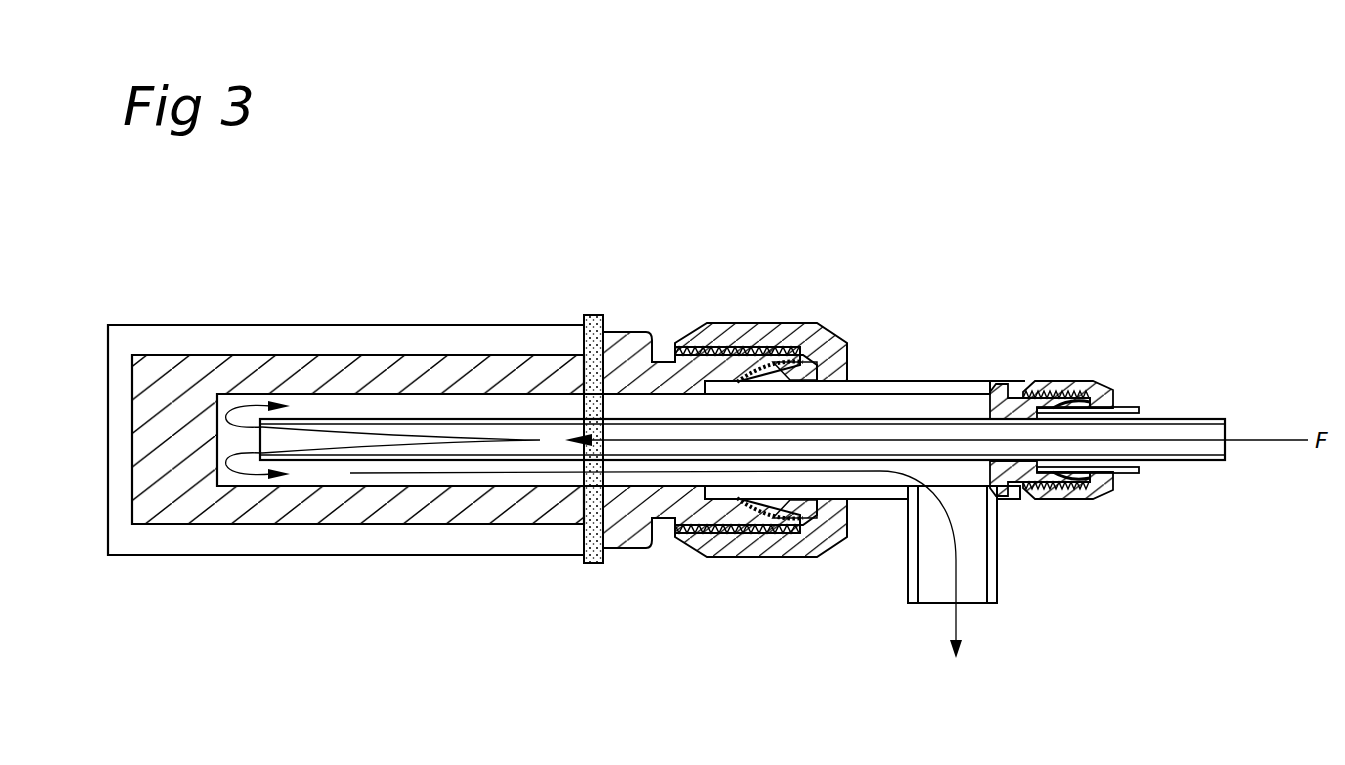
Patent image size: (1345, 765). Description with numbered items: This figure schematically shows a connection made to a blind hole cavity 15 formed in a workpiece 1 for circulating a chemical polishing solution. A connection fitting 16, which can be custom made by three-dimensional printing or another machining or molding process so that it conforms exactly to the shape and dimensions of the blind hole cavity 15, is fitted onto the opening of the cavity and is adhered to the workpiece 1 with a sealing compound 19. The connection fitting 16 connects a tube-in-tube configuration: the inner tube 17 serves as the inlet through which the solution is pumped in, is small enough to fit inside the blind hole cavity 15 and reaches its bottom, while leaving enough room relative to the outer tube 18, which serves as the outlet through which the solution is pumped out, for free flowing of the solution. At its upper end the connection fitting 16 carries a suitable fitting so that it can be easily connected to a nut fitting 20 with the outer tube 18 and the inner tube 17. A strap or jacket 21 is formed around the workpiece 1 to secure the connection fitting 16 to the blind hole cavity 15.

The workpiece 1 is at (205, 365).
The blind hole cavity 15 is at (231, 483).
The connection fitting 16 is at (626, 328).
The inner tube 17 is at (401, 418).
The outer tube 18 is at (878, 386).
The sealing compound 19 is at (590, 318).
The nut fitting 20 is at (1053, 382).
The jacket 21 is at (440, 548).